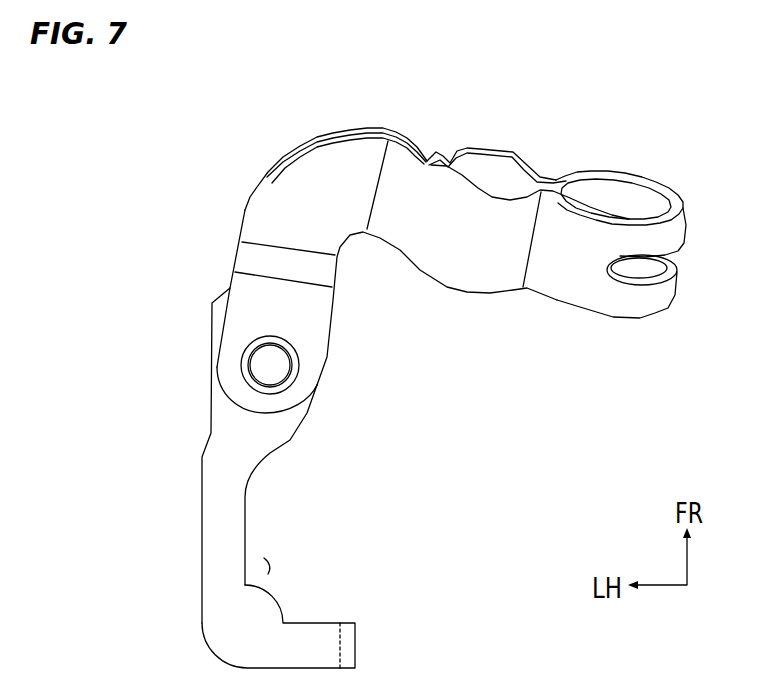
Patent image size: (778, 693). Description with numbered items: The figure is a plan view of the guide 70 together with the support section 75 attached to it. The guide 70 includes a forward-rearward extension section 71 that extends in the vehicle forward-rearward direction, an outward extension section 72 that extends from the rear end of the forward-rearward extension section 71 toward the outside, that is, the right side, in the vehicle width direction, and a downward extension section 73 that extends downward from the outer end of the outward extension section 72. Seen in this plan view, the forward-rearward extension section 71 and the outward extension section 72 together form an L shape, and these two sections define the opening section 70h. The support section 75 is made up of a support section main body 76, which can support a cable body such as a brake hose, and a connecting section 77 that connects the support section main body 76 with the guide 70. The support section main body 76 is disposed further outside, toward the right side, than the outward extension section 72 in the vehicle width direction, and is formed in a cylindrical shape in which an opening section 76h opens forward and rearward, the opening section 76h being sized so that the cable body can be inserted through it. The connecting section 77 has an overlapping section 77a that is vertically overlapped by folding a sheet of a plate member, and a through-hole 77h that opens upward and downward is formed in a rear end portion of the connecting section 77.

The guide 70 is at (193, 489).
The forward-rearward extension section 71 is at (215, 533).
The outward extension section 72 is at (305, 640).
The downward extension section 73 is at (350, 647).
The opening section 70h is at (266, 568).
The support section 75 is at (532, 303).
The support section main body 76 is at (585, 295).
The opening section 76h is at (606, 197).
The connecting section 77 is at (350, 152).
The overlapping section 77a is at (313, 200).
The through-hole 77h is at (290, 364).